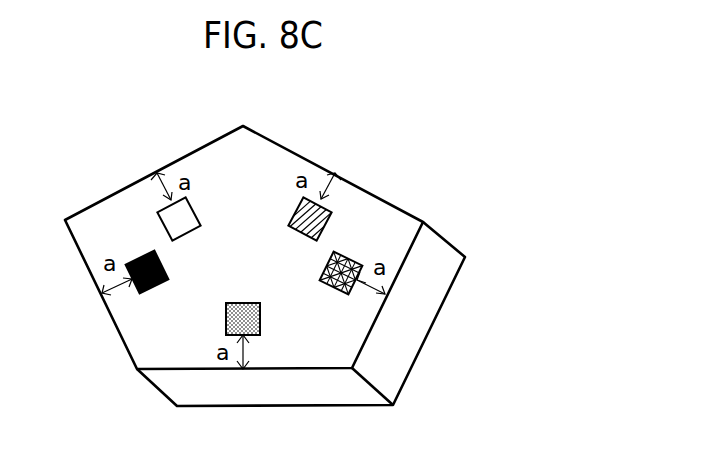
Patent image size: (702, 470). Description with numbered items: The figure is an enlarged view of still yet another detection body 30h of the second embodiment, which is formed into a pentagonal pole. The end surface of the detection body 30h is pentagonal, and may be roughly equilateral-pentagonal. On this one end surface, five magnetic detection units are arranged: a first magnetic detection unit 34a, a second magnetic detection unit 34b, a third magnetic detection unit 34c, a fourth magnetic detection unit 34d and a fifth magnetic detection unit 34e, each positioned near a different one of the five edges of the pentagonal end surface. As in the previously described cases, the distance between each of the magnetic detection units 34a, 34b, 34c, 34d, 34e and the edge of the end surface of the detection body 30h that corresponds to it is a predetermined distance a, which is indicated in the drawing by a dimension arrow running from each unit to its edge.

The detection body 30h is at (450, 142).
The first magnetic detection unit 34a is at (261, 319).
The second magnetic detection unit 34b is at (152, 295).
The third magnetic detection unit 34c is at (158, 223).
The fourth magnetic detection unit 34d is at (332, 226).
The fifth magnetic detection unit 34e is at (332, 293).